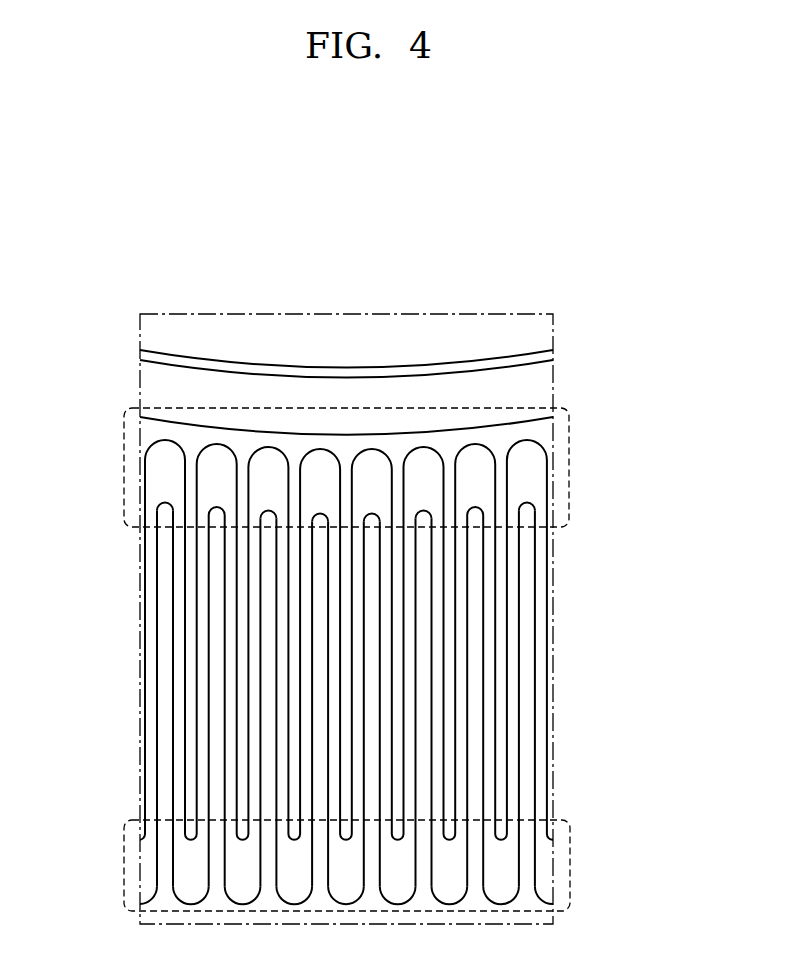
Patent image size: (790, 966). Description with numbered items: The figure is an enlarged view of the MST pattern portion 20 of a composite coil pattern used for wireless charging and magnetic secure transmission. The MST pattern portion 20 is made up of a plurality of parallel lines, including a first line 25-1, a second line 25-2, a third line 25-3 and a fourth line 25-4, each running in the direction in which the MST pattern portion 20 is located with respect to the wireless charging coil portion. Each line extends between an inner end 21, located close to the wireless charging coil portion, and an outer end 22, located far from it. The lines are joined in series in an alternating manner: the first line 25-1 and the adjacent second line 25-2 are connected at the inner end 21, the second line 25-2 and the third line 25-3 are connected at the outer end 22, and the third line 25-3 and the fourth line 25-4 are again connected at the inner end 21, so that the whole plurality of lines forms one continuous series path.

The MST pattern portion 20 is at (596, 547).
The inner end 21 is at (124, 472).
The outer end 22 is at (124, 867).
The first line 25-1 is at (543, 609).
The second line 25-2 is at (513, 648).
The third line 25-3 is at (490, 688).
The fourth line 25-4 is at (460, 723).